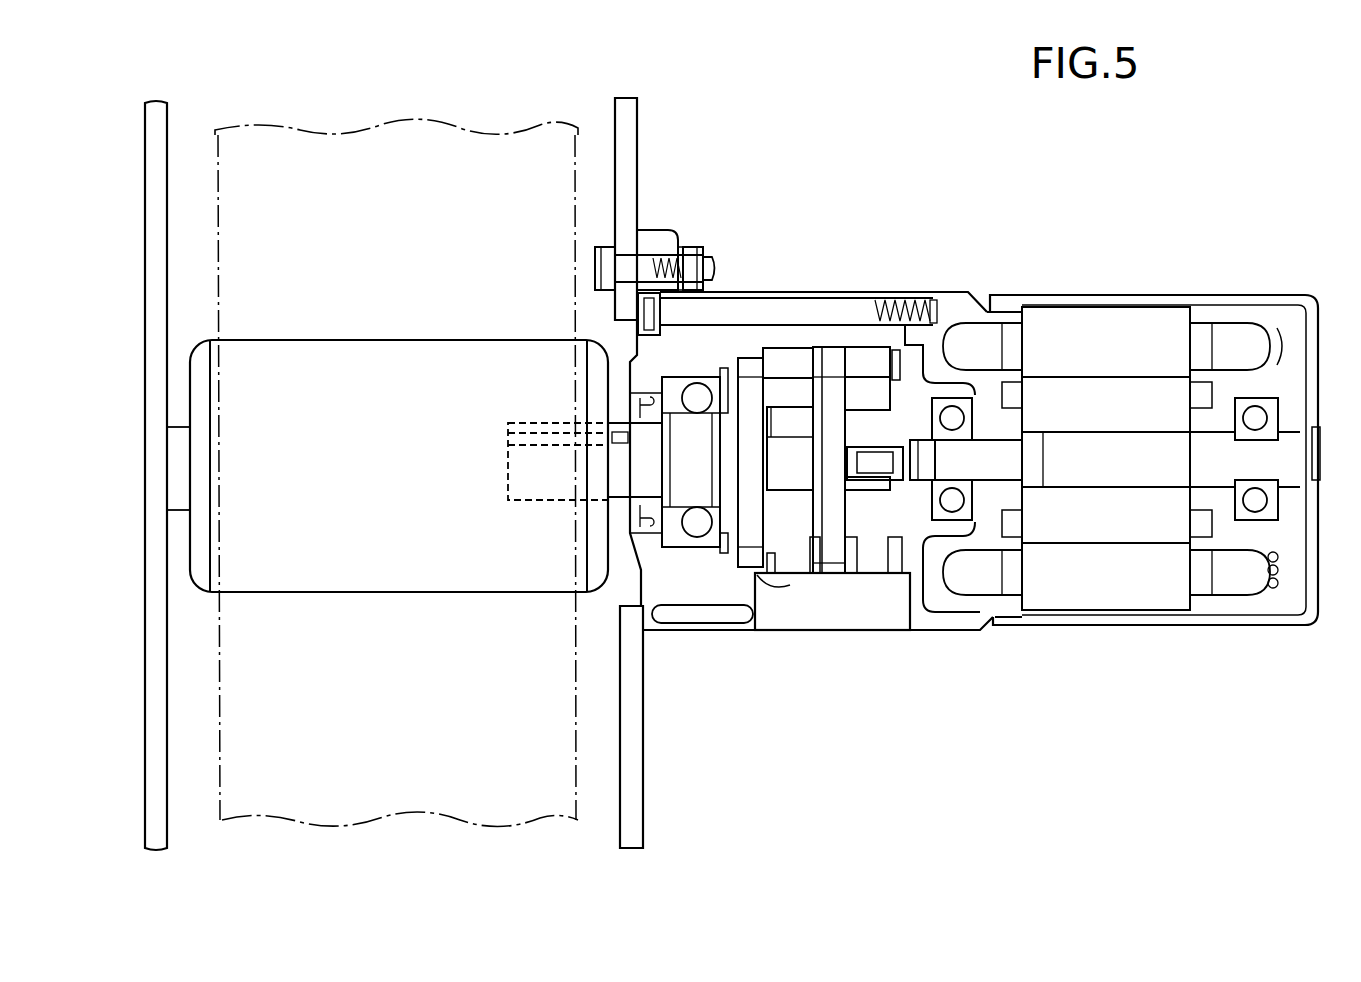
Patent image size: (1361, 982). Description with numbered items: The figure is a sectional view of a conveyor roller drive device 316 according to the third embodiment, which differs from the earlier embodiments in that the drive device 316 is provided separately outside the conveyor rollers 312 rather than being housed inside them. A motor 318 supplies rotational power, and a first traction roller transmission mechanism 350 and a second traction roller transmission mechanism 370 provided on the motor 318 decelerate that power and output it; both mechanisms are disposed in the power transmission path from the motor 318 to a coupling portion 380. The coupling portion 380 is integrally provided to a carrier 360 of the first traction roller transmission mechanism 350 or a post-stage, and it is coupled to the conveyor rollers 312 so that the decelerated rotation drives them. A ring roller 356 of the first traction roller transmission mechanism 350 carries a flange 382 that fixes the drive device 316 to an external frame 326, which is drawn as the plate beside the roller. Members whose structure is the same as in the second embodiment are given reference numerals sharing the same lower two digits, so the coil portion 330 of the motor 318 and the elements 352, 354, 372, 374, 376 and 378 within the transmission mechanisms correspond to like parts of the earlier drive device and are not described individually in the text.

The conveyor roller 312 is at (397, 357).
The conveyor roller drive device 316 is at (655, 735).
The motor 318 is at (1062, 598).
The external frame 326 is at (637, 122).
The motor coil 330 is at (1000, 477).
The first traction roller transmission mechanism 350 is at (730, 640).
The gear 352 is at (822, 372).
The gear 354 is at (802, 420).
The ring roller 356 is at (756, 577).
The carrier 360 is at (748, 413).
The second traction roller transmission mechanism 370 is at (820, 640).
The coupling 372 is at (897, 437).
The clutch plate 374 is at (863, 372).
The clutch shaft 376 is at (873, 573).
The clutch disc 378 is at (831, 372).
The coupling portion 380 is at (545, 467).
The flange 382 is at (655, 230).